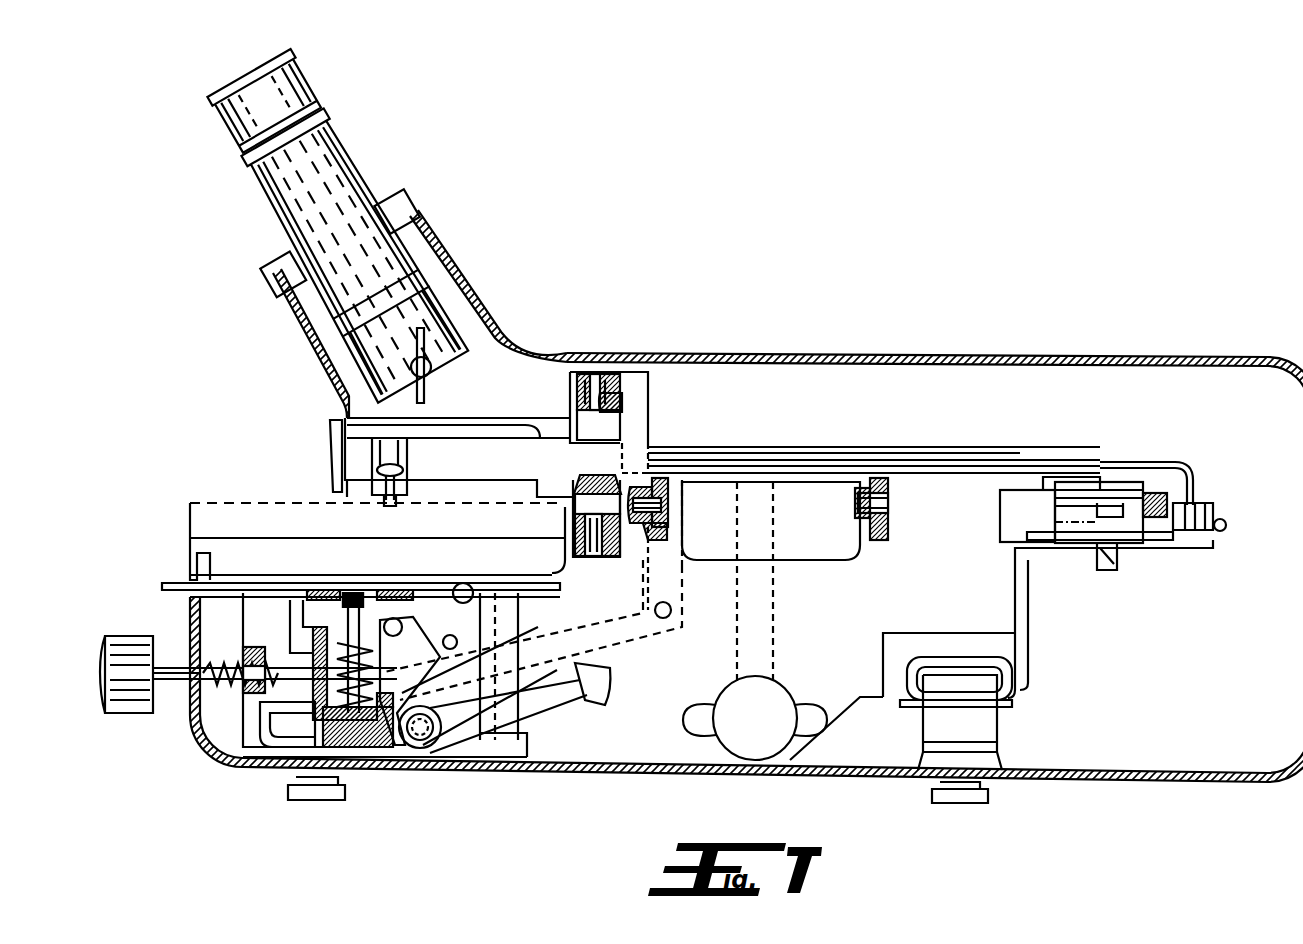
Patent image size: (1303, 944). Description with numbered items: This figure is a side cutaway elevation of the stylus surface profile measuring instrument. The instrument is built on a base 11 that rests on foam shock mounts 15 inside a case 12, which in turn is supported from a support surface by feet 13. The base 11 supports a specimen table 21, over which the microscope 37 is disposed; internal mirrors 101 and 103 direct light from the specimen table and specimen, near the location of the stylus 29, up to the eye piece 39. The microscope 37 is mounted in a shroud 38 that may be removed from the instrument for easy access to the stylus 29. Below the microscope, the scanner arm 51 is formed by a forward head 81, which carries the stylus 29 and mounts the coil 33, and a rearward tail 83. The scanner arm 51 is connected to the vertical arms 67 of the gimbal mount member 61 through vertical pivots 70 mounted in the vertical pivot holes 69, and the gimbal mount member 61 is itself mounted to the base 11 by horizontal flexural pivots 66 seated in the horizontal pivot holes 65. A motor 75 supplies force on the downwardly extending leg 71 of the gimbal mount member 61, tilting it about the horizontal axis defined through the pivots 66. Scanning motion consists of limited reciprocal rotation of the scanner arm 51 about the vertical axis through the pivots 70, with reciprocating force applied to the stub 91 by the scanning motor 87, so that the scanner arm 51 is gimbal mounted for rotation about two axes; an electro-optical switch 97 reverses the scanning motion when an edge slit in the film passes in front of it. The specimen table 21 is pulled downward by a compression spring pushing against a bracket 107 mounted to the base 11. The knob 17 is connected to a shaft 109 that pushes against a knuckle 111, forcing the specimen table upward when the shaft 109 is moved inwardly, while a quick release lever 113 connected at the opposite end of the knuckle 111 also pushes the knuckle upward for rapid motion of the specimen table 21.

The base 11 is at (868, 669).
The case 12 is at (1130, 782).
The feet 13 is at (328, 800).
The foam shock mounts 15 is at (285, 732).
The knob 17 is at (132, 632).
The specimen table 21 is at (190, 525).
The stylus 29 is at (392, 506).
The coil 33 is at (407, 468).
The microscope 37 is at (370, 88).
The shroud 38 is at (525, 355).
The eye piece 39 is at (235, 92).
The scanner arm 51 is at (640, 400).
The gimbal mount member 61 is at (810, 515).
The horizontal pivot holes 65 is at (660, 512).
The horizontal flexural pivots 66 is at (662, 505).
The vertical arm 67 is at (618, 405).
The vertical pivot holes 69 is at (598, 376).
The vertical pivots 70 is at (578, 386).
The downwardly extending leg 71 is at (765, 636).
The motor 75 is at (770, 705).
The forward head 81 is at (534, 475).
The rearward tail 83 is at (893, 455).
The scanning motor 87 is at (1133, 505).
The stub 91 is at (1198, 474).
The electro-optical switch 97 is at (1183, 545).
The internal mirror 101 is at (425, 398).
The internal mirror 103 is at (332, 460).
The bracket 107 is at (365, 732).
The shaft 109 is at (180, 682).
The knuckle 111 is at (470, 665).
The quick release lever 113 is at (545, 700).